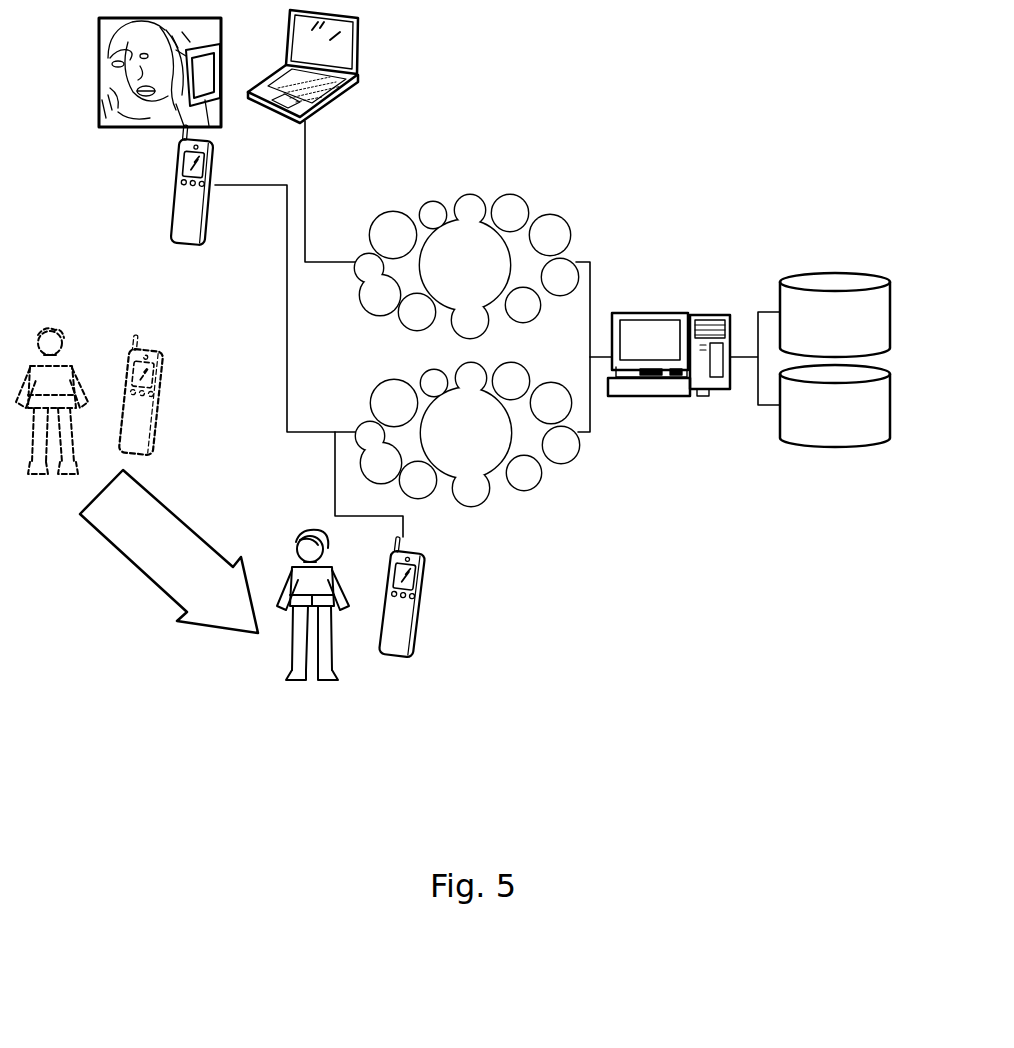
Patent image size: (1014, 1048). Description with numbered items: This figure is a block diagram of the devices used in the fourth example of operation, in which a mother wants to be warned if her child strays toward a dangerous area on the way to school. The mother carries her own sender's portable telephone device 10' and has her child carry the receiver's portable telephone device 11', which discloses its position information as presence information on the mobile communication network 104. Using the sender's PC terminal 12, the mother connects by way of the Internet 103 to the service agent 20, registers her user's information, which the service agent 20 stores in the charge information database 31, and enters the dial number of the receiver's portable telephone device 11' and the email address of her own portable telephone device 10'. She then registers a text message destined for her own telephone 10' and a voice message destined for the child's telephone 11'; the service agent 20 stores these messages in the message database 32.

The sender's portable telephone device 10' is at (155, 189).
The sender's PC terminal 12 is at (360, 37).
The Internet 103 is at (557, 185).
The mobile communication network 104 is at (556, 356).
The service agent 20 is at (662, 313).
The charge information database 31 is at (841, 273).
The message database 32 is at (842, 446).
The receiver's portable telephone device 11' is at (310, 496).